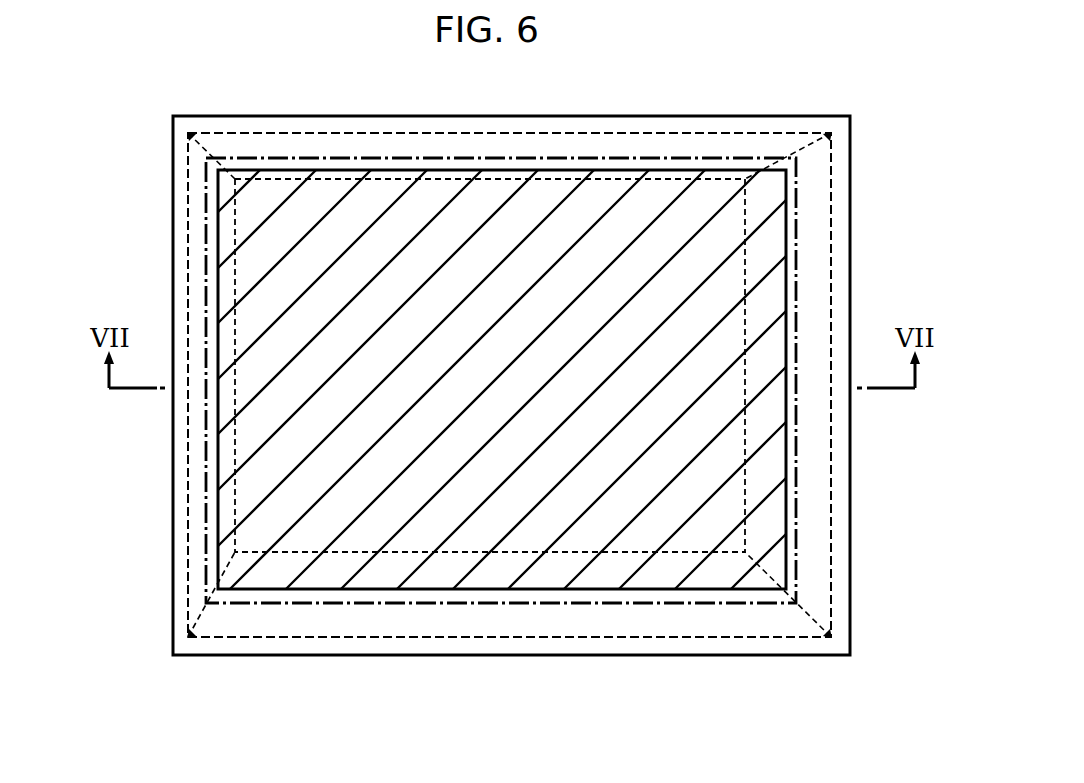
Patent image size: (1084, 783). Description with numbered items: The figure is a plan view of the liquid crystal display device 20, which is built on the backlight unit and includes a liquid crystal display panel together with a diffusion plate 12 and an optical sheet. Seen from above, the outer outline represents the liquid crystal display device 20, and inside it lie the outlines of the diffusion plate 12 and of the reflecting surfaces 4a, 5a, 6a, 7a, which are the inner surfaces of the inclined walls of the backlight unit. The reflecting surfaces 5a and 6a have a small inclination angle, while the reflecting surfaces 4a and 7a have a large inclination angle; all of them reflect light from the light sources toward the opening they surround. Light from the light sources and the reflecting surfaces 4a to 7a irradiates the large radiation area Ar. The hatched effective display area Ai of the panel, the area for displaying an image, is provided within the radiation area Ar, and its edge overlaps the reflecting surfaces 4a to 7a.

The liquid crystal display device 20 is at (168, 278).
The diffusion plate 12 is at (808, 202).
The reflecting surface 7a is at (610, 143).
The reflecting surface 4a is at (207, 518).
The reflecting surface 6a is at (813, 270).
The reflecting surface 5a is at (505, 610).
The effective display area Ai is at (283, 498).
The radiation area Ar is at (723, 602).